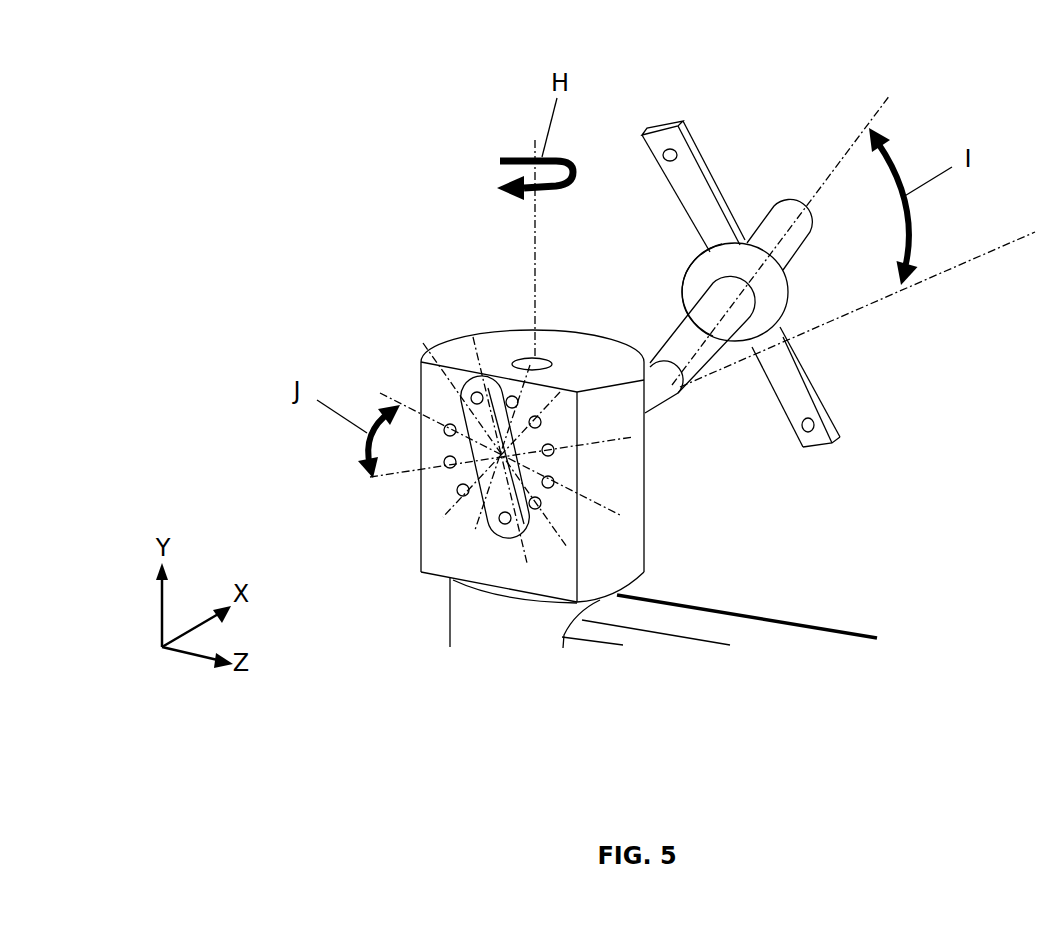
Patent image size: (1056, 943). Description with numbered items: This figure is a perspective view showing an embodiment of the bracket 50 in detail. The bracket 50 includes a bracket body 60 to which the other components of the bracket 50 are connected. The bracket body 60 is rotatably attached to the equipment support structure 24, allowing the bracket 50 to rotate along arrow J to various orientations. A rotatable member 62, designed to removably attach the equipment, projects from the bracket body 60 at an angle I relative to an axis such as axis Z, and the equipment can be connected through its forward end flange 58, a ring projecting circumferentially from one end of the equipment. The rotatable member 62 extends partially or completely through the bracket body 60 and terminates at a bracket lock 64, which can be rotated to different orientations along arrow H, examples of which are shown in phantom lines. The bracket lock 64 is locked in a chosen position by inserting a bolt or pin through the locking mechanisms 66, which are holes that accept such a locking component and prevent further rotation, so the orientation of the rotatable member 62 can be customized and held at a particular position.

The equipment support structure 24 is at (833, 630).
The bracket 50 is at (396, 293).
The forward end flange 58 is at (668, 152).
The bracket body 60 is at (630, 555).
The rotatable member 62 is at (753, 263).
The bracket lock 64 is at (498, 497).
The locking mechanisms 66 is at (477, 398).